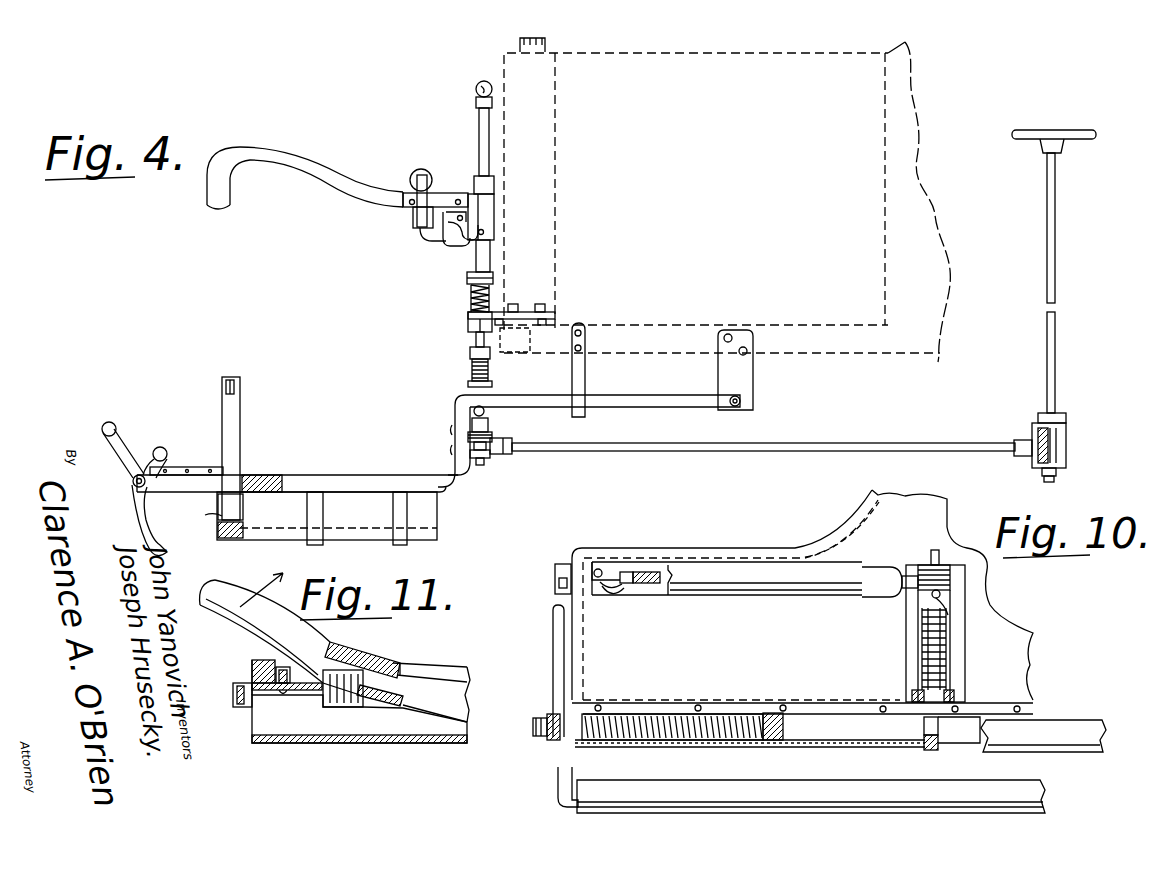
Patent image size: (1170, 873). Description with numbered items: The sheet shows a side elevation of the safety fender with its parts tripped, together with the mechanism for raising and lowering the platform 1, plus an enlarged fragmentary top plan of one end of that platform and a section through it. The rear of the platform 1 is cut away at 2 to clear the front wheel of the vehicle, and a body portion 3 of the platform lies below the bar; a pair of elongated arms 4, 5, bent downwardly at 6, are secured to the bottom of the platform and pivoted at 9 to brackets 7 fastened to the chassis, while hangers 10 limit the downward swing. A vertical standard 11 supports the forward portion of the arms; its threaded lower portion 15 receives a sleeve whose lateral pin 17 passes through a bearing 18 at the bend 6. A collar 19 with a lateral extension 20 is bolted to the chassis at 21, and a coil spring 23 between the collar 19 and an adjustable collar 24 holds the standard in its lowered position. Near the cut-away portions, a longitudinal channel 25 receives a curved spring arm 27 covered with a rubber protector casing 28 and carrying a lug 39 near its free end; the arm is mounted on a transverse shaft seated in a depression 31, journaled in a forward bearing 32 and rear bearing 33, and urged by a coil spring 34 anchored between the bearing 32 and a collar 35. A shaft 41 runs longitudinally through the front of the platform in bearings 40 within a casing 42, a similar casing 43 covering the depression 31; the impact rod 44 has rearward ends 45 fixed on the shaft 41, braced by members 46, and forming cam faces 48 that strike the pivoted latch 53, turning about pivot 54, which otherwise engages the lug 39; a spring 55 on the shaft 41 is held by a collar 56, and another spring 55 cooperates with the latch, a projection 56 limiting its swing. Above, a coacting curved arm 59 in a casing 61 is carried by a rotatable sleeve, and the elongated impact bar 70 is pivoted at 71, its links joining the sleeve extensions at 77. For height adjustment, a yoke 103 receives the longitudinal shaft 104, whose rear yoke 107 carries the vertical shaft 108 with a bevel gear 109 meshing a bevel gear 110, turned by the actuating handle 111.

In FIG. 4, the platform 1 is at (192, 493).
In FIG. 4, the cut away portions 2 is at (377, 483).
In FIG. 4, the base body 3 is at (292, 504).
In FIG. 4, the elongated arm 4 is at (650, 398).
In FIG. 4, the elongated arm 5 is at (590, 152).
In FIG. 4, the bend 6 is at (620, 237).
In FIG. 4, the bracket 7 is at (742, 383).
In FIG. 4, the pivotal connection 9 is at (739, 405).
In FIG. 10, the pivotal connection 9 is at (842, 530).
In FIG. 4, the hanger 10 is at (586, 370).
In FIG. 4, the vertical standard 11 is at (480, 114).
In FIG. 10, the vertical standard 11 is at (560, 574).
In FIG. 4, the threaded portion 15 is at (472, 367).
In FIG. 10, the threaded portion 15 is at (952, 582).
In FIG. 4, the laterally extending pin 17 is at (490, 412).
In FIG. 4, the bearing 18 is at (472, 418).
In FIG. 4, the collar 19 is at (467, 323).
In FIG. 4, the lateral extension 20 is at (540, 313).
In FIG. 4, the bolt 21 is at (513, 304).
In FIG. 4, the coil spring 23 is at (469, 297).
In FIG. 4, the adjustable collar 24 is at (466, 277).
In FIG. 10, the longitudinally extending channel 25 is at (662, 572).
In FIG. 11, the longitudinally extending channel 25 is at (424, 723).
In FIG. 4, the curved spring arm 27 is at (243, 445).
In FIG. 10, the curved spring arm 27 is at (742, 582).
In FIG. 11, the curved spring arm 27 is at (378, 674).
In FIG. 11, the protector casing 28 is at (222, 608).
In FIG. 10, the transversely extending depression 31 is at (963, 650).
In FIG. 10, the forward bearing 32 is at (952, 697).
In FIG. 10, the rear bearing 33 is at (927, 563).
In FIG. 10, the coil spring 34 is at (920, 666).
In FIG. 10, the collar 35 is at (947, 596).
In FIG. 4, the lug 39 is at (227, 382).
In FIG. 10, the lug 39 is at (645, 572).
In FIG. 11, the lug 39 is at (343, 708).
In FIG. 10, the bearing 40 is at (573, 730).
In FIG. 10, the shaft 41 is at (873, 737).
In FIG. 10, the casing 42 is at (817, 742).
In FIG. 4, the casing 43 is at (190, 467).
In FIG. 10, the elongated rod 44 is at (1078, 733).
In FIG. 4, the rearwardly extending arm 45 is at (158, 520).
In FIG. 10, the rearwardly extending arm 45 is at (554, 666).
In FIG. 10, the auxiliary bracing member 46 is at (937, 748).
In FIG. 4, the cam face 48 is at (165, 448).
In FIG. 4, the pivoted latch 53 is at (213, 519).
In FIG. 10, the pivoted latch 53 is at (560, 556).
In FIG. 11, the pivoted latch 53 is at (236, 733).
In FIG. 10, the pivot 54 is at (601, 568).
In FIG. 11, the pivot 54 is at (279, 697).
In FIG. 10, the coil spring 55 is at (618, 590).
In FIG. 10, the collar 56 is at (615, 576).
In FIG. 4, the coacting curved arm 59 is at (415, 232).
In FIG. 4, the protector casing 61 is at (276, 157).
In FIG. 4, the elongated bar 70 is at (428, 190).
In FIG. 4, the pivot 71 is at (417, 170).
In FIG. 4, the pivotal connection 77 is at (494, 212).
In FIG. 4, the yoke 103 is at (506, 455).
In FIG. 4, the elongated shaft 104 is at (735, 452).
In FIG. 4, the yoke 107 is at (1030, 441).
In FIG. 4, the vertical shaft 108 is at (1060, 284).
In FIG. 4, the bevel gear 109 is at (1062, 440).
In FIG. 4, the bevel gear 110 is at (1030, 459).
In FIG. 4, the actuating handle 111 is at (1072, 136).